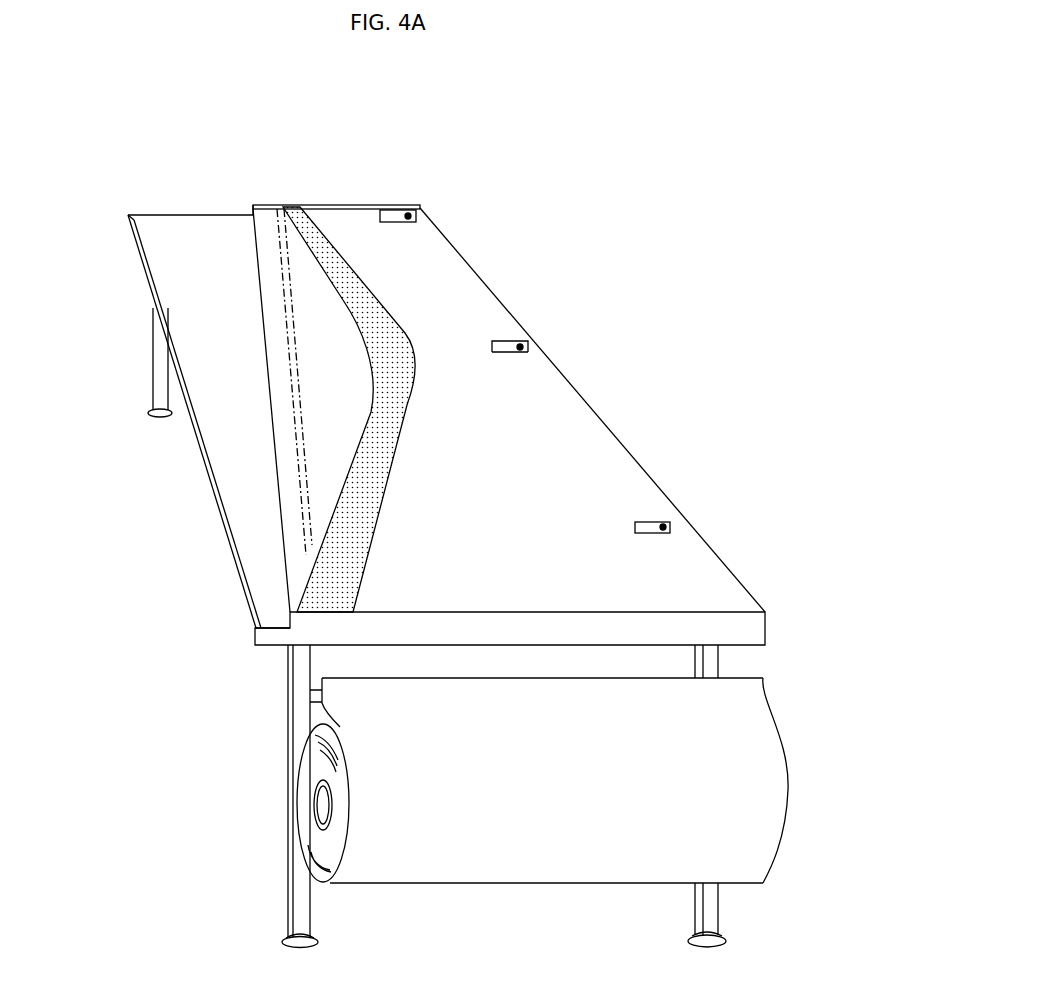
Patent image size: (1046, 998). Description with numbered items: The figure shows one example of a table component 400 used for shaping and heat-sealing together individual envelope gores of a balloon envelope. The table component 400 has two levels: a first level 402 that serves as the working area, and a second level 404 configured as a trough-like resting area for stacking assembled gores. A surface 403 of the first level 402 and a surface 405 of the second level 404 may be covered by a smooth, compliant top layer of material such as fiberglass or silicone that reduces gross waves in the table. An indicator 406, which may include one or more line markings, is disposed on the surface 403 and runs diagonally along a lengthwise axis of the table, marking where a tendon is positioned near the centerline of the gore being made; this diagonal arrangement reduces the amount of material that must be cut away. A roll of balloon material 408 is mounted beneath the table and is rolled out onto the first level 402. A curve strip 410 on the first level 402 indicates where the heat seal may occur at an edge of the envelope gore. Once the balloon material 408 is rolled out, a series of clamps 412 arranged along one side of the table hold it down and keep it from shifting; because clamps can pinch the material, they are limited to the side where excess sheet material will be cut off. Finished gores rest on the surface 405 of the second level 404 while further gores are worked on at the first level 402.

The table component 400 is at (744, 34).
The first level 402 is at (358, 204).
The surface of the first level 403 is at (432, 350).
The second level 404 is at (192, 213).
The surface of the second level 405 is at (230, 375).
The indicator 406 is at (294, 425).
The roll of balloon material 408 is at (455, 770).
The curve strip 410 is at (375, 490).
The clamps 412 is at (516, 338).